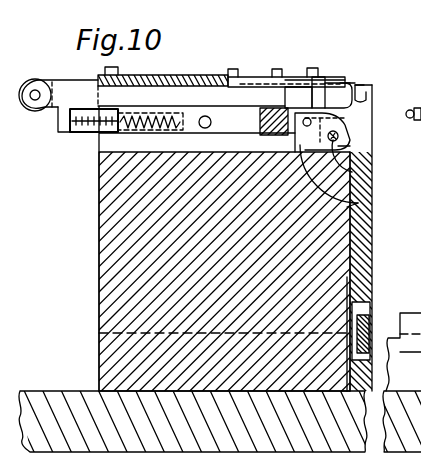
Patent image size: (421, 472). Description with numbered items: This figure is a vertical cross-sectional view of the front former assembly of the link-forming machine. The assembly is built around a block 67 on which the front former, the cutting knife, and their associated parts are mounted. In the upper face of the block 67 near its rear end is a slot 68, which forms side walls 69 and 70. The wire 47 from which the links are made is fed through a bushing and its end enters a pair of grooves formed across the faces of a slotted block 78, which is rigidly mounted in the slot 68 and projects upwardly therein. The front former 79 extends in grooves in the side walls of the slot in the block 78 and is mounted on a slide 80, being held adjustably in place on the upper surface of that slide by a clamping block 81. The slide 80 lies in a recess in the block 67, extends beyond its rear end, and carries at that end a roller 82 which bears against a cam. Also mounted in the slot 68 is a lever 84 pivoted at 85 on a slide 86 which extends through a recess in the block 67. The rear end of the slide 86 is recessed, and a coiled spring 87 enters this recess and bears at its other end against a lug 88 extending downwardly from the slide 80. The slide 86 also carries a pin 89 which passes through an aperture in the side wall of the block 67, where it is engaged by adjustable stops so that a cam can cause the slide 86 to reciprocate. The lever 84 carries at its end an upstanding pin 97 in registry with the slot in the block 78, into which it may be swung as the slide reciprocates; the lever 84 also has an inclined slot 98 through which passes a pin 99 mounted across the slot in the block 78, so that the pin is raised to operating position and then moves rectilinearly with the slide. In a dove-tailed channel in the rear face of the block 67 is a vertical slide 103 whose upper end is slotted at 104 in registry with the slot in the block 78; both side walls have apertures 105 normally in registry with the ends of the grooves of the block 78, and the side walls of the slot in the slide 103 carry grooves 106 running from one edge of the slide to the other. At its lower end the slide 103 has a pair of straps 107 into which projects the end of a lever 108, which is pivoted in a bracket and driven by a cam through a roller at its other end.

The wire 47 is at (348, 83).
The block 67 is at (210, 271).
The slot 68 is at (295, 100).
The side wall 69 is at (314, 95).
The side wall 70 is at (420, 128).
The slotted block 78 is at (340, 80).
The front former 79 is at (332, 90).
The slide 80 is at (203, 88).
The clamping block 81 is at (257, 77).
The roller 82 is at (33, 80).
The lever 84 is at (373, 178).
The pivot 85 is at (347, 207).
The slide 86 is at (127, 133).
The coiled spring 87 is at (88, 132).
The lug 88 is at (70, 132).
The pin 89 is at (203, 116).
The upstanding pin 97 is at (362, 90).
The slot 98 is at (338, 146).
The pin 99 is at (348, 130).
The vertical slide 103 is at (362, 237).
The slot 104 is at (379, 158).
The apertures 105 is at (352, 85).
The grooves 106 is at (367, 97).
The straps 107 is at (348, 388).
The lever 108 is at (361, 355).